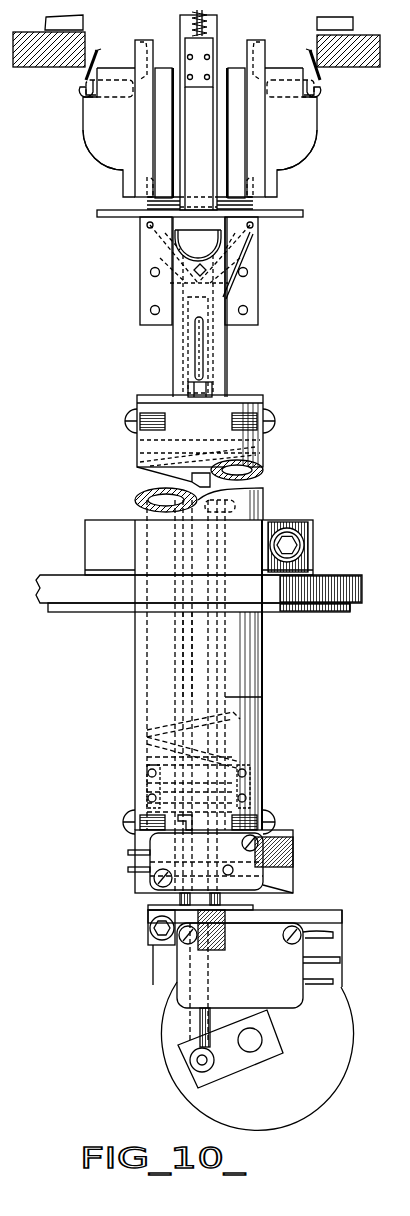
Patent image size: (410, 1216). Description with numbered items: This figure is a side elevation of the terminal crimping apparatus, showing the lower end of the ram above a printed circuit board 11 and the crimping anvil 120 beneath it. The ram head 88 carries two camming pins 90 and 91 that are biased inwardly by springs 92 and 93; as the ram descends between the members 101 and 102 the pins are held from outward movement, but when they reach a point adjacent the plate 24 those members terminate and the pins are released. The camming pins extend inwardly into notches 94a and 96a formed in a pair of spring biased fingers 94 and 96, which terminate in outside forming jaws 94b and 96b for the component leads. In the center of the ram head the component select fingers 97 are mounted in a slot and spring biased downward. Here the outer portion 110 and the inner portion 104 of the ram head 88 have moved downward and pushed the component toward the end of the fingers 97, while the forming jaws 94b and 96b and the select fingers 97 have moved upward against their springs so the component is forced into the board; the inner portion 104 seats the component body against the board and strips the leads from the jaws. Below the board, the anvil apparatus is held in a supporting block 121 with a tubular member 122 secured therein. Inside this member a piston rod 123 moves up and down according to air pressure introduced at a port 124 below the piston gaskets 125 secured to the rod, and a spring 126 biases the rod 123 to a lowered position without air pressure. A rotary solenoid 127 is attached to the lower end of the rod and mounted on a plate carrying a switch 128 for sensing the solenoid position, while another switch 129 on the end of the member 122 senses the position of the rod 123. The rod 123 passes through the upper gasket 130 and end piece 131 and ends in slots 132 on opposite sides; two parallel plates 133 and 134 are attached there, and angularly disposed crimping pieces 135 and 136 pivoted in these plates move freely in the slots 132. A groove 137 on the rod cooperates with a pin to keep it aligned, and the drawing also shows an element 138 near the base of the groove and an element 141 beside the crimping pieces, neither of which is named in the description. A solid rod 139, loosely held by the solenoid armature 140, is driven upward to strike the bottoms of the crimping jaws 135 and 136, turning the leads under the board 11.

The circuit board 11 is at (300, 210).
The plate 24 is at (52, 67).
The ram head 88 is at (318, 131).
The camming pin 90 is at (79, 94).
The camming pin 91 is at (322, 95).
The spring 92 is at (96, 55).
The spring 93 is at (304, 55).
The spring biased finger 94 is at (140, 118).
The notch 94a is at (143, 42).
The forming jaw 94b is at (148, 190).
The spring biased finger 96 is at (260, 118).
The notch 96a is at (257, 42).
The forming jaw 96b is at (252, 190).
The component select fingers 97 is at (209, 182).
The member 101 is at (353, 22).
The member 102 is at (45, 22).
The inner portion of the ram head 104 is at (161, 68).
The outer portion of the ram head 110 is at (116, 150).
The crimping anvil 120 is at (136, 255).
The supporting block 121 is at (313, 545).
The tubular member 122 is at (264, 660).
The piston rod 123 is at (256, 697).
The port 124 is at (293, 847).
The piston gaskets 125 is at (252, 800).
The spring 126 is at (150, 728).
The rotary solenoid 127 is at (160, 1062).
The switch 128 is at (330, 965).
The switch 129 is at (270, 878).
The upper gasket 130 is at (216, 440).
The end piece 131 is at (255, 410).
The slots 132 is at (160, 258).
The parallel plate 133 is at (140, 312).
The parallel plate 134 is at (259, 312).
The crimping piece 135 is at (146, 228).
The crimping piece 136 is at (255, 228).
The groove 137 is at (206, 350).
The stop block 138 is at (214, 388).
The solid rod 139 is at (192, 657).
The rotary solenoid armature 140 is at (262, 1064).
The link bar 141 is at (252, 258).